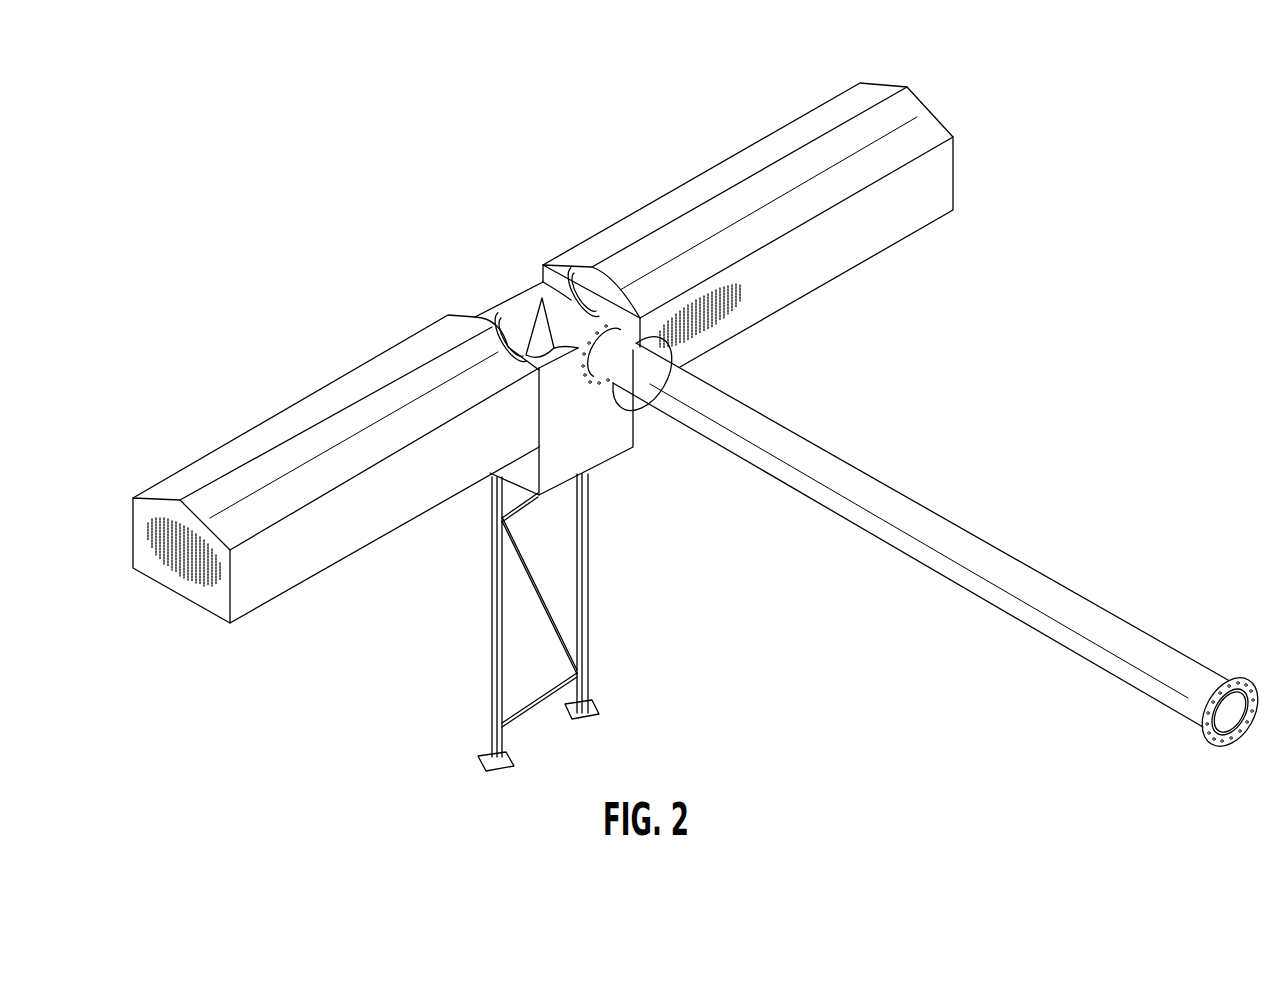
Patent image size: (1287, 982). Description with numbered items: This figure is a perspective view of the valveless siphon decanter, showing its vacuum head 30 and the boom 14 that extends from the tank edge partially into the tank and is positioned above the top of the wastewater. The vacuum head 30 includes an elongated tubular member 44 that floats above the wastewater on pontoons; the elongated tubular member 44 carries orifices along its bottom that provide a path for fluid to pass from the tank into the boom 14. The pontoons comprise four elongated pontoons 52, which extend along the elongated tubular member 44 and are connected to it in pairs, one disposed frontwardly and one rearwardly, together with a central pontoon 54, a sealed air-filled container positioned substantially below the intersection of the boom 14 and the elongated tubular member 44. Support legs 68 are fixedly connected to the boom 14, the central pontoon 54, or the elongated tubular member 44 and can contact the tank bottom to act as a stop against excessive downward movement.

The vacuum head 30 is at (556, 197).
The elongated pontoon 52 is at (797, 120).
The central pontoon 54 is at (603, 440).
The elongated tubular member 44 is at (515, 300).
The boom 14 is at (890, 486).
The support leg 68 is at (487, 583).